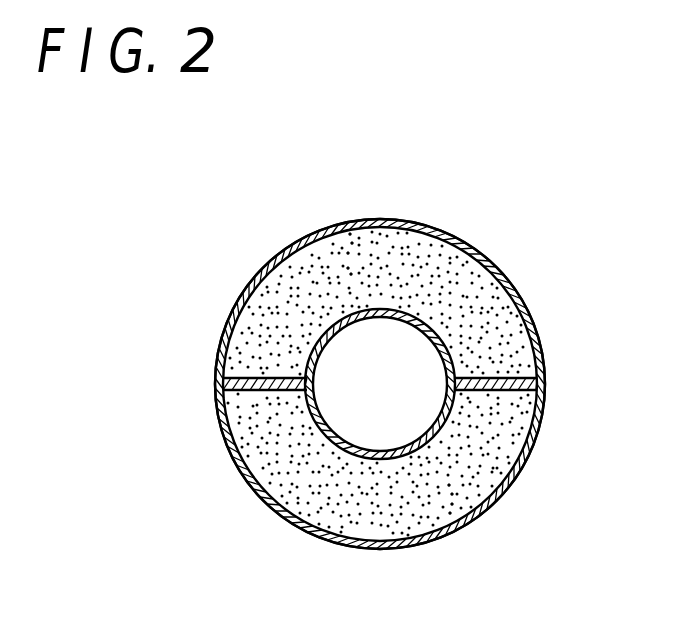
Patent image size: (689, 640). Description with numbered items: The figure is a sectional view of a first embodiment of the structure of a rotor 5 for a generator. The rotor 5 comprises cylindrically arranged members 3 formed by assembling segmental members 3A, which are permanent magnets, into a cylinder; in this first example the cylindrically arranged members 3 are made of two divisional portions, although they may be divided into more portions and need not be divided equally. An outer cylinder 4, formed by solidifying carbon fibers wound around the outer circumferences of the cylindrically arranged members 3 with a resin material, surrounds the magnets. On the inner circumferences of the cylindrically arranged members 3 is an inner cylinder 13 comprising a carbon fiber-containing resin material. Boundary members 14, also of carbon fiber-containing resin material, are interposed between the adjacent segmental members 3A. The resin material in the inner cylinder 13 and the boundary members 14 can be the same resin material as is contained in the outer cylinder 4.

The cylindrically arranged members 3 is at (400, 273).
The segmental members 3A is at (357, 277).
The outer cylinder 4 is at (537, 338).
The rotor 5 is at (523, 282).
The inner cylinder 13 is at (333, 328).
The boundary members 14 is at (250, 382).